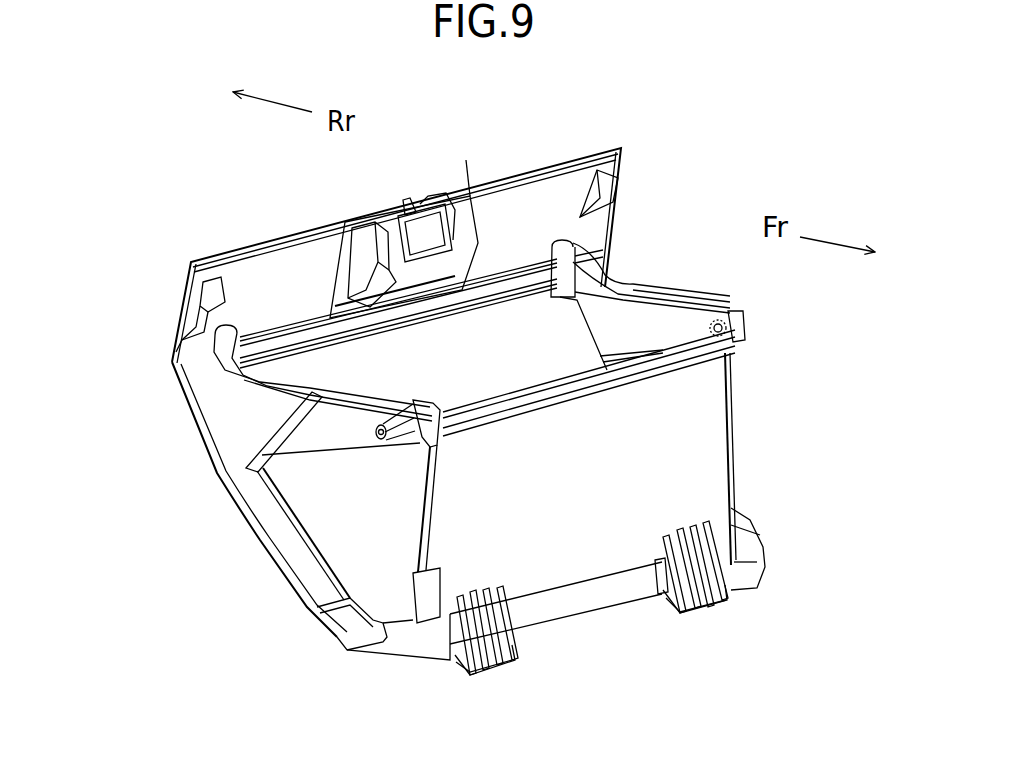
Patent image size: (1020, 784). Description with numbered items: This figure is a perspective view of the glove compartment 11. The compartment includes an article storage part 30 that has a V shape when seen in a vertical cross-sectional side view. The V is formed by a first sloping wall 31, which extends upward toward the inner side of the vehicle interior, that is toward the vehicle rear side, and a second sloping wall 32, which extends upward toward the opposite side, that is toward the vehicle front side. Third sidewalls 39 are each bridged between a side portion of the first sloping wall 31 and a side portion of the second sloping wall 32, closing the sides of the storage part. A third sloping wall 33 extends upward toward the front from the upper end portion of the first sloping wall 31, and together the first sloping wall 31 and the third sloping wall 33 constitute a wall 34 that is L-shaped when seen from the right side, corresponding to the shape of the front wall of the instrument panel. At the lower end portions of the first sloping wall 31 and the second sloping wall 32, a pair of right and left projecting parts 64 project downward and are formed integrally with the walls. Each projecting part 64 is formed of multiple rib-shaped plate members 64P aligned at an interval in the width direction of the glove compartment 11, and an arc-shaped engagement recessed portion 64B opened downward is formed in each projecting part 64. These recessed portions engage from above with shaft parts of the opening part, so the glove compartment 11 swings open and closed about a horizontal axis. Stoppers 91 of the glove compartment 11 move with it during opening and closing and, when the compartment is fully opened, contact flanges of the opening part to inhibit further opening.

The glove compartment 11 is at (138, 223).
The article storage part 30 is at (573, 337).
The first sloping wall 31 is at (268, 548).
The second sloping wall 32 is at (707, 452).
The third sloping wall 33 is at (255, 265).
The wall 34 is at (390, 404).
The third sidewall 39 is at (663, 320).
The projecting part 64 is at (513, 663).
The engagement recessed portion 64B is at (457, 683).
The rib-shaped plate member 64P is at (488, 593).
The stopper 91 is at (745, 318).